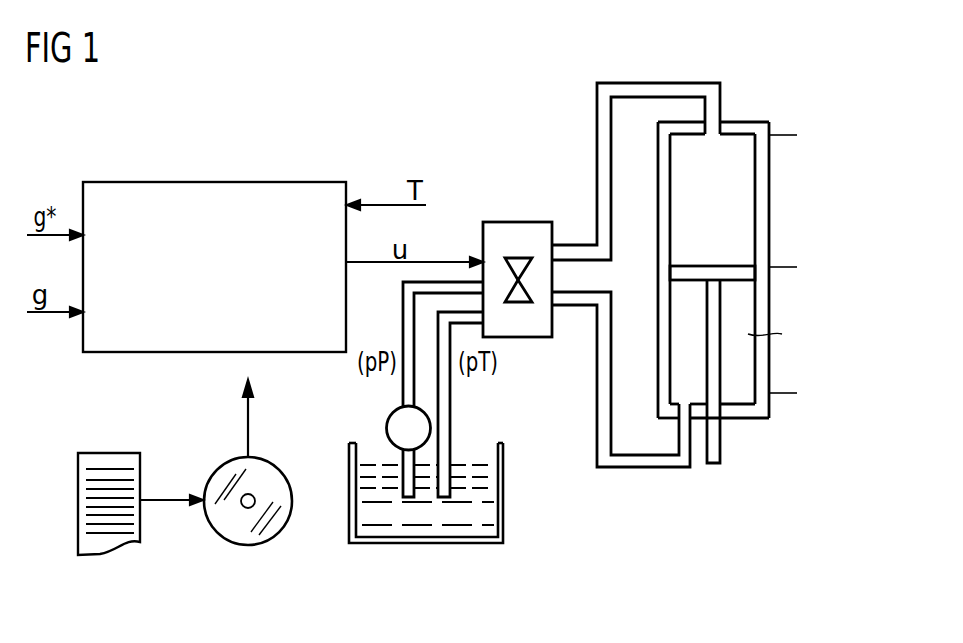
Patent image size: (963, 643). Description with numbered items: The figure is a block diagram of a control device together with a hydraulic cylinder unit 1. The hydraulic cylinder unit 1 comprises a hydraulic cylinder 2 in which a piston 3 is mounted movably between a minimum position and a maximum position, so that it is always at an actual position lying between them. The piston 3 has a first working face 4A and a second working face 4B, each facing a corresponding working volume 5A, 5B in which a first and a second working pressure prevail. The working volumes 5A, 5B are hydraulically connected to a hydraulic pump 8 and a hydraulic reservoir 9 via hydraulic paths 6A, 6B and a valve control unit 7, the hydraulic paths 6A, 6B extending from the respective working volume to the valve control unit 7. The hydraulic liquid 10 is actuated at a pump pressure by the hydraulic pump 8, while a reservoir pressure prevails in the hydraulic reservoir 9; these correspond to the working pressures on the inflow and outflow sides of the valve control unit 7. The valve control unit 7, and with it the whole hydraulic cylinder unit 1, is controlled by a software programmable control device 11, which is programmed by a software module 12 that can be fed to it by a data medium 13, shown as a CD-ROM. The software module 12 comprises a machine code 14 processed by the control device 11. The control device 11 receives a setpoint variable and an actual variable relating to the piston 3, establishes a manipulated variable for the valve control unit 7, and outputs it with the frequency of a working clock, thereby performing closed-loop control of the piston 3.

The hydraulic cylinder unit 1 is at (574, 77).
The hydraulic cylinder 2 is at (770, 187).
The piston 3 is at (689, 337).
The first working face 4A is at (708, 266).
The second working face 4B is at (697, 282).
The first working volume 5A is at (678, 190).
The second working volume 5B is at (748, 364).
The first hydraulic path 6A is at (600, 143).
The second hydraulic path 6B is at (637, 467).
The valve control unit 7 is at (517, 222).
The hydraulic pump 8 is at (387, 428).
The hydraulic reservoir 9 is at (450, 480).
The hydraulic liquid 10 is at (468, 480).
The control device 11 is at (216, 182).
The software module 12 is at (83, 475).
The data medium 13 is at (247, 546).
The machine code 14 is at (64, 467).